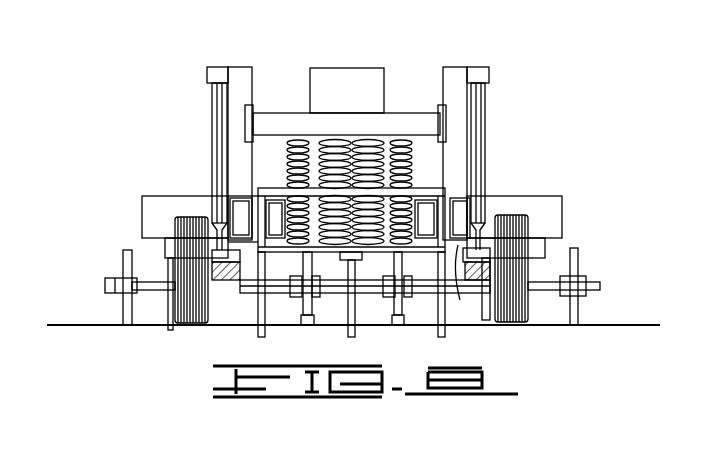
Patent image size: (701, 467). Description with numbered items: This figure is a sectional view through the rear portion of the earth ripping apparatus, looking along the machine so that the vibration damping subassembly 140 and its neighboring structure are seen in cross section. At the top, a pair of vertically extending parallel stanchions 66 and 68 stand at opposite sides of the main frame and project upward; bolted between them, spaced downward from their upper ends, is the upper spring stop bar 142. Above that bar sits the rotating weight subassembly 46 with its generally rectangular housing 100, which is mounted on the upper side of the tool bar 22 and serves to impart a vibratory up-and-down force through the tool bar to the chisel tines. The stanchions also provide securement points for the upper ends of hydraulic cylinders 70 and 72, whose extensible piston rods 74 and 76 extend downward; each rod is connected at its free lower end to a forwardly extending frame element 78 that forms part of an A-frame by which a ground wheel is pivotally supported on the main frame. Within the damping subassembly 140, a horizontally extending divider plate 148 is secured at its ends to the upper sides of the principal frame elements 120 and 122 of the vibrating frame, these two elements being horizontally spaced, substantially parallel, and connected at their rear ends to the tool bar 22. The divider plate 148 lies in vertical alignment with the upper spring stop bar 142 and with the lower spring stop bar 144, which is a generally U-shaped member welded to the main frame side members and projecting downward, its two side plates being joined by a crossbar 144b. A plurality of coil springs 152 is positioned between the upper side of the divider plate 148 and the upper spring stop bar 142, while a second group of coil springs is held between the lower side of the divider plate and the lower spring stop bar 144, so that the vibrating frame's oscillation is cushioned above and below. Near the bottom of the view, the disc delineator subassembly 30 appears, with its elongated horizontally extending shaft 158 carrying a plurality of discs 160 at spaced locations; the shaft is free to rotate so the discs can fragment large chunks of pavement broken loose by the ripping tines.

The tool bar 22 is at (142, 212).
The disc delineator subassembly 30 is at (120, 301).
The rotating weight subassembly 46 is at (385, 64).
The stanchion 66 is at (240, 62).
The stanchion 68 is at (455, 62).
The hydraulic cylinder 70 is at (213, 98).
The hydraulic cylinder 72 is at (484, 100).
The piston rod 74 is at (205, 223).
The piston rod 76 is at (513, 215).
The forwardly extending frame element 78 is at (234, 282).
The housing 100 is at (362, 104).
The principal frame element 120 is at (285, 262).
The principal frame element 122 is at (422, 252).
The vibration damping subassembly 140 is at (425, 160).
The upper spring stop bar 142 is at (362, 134).
The lower spring stop bar 144 is at (372, 258).
The crossbar 144b is at (326, 265).
The divider plate 148 is at (275, 195).
The coil springs 152 is at (288, 140).
The shaft 158 is at (105, 285).
The discs 160 is at (126, 250).